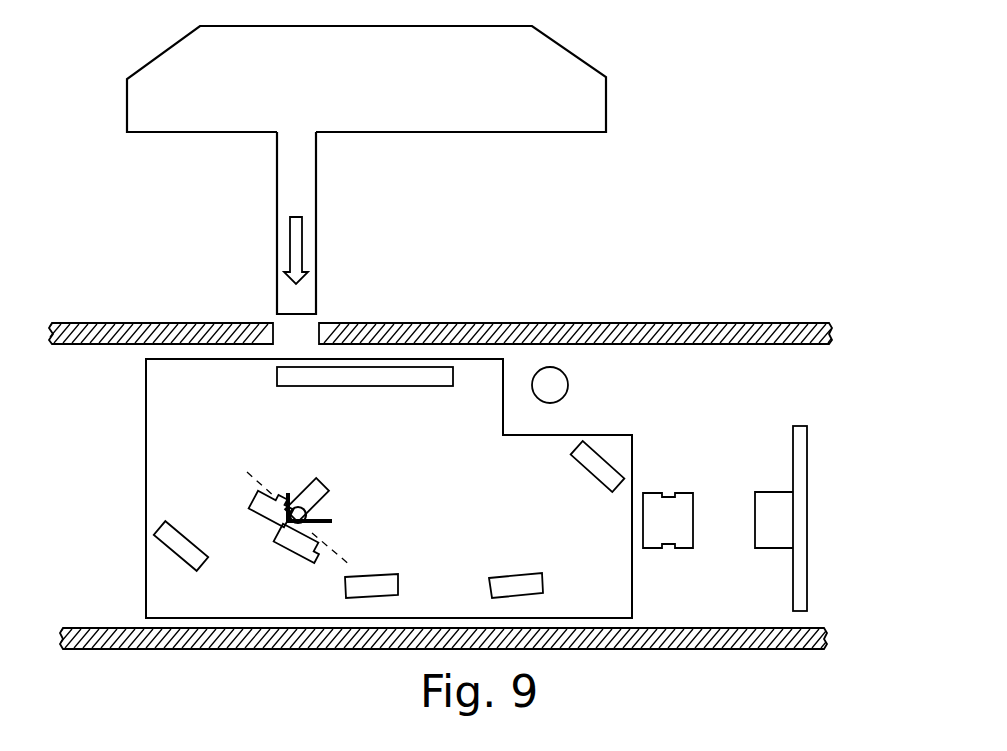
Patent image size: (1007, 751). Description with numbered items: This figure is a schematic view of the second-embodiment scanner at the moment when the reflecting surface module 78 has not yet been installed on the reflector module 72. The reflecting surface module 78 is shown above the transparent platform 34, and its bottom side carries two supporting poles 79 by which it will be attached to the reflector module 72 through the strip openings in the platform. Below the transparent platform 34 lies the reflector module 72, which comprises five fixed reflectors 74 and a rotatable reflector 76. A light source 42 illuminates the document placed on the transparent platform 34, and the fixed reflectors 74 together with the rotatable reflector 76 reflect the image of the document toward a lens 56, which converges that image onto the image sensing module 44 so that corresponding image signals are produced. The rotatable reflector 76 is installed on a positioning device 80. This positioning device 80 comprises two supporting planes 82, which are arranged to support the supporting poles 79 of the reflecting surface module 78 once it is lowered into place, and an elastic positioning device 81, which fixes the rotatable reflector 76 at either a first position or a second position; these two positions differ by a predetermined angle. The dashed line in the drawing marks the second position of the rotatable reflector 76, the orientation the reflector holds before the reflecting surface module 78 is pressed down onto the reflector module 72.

The reflecting surface module 78 is at (156, 72).
The supporting poles 79 is at (308, 178).
The transparent platform 34 is at (681, 323).
The reflector module 72 is at (146, 396).
The fixed reflectors 74 is at (278, 376).
The light source 42 is at (556, 388).
The rotatable reflector 76 is at (283, 497).
The positioning device 80 is at (340, 482).
The elastic positioning device 81 is at (332, 523).
The supporting planes 82 is at (328, 498).
The lens 56 is at (681, 505).
The image sensing module 44 is at (780, 517).